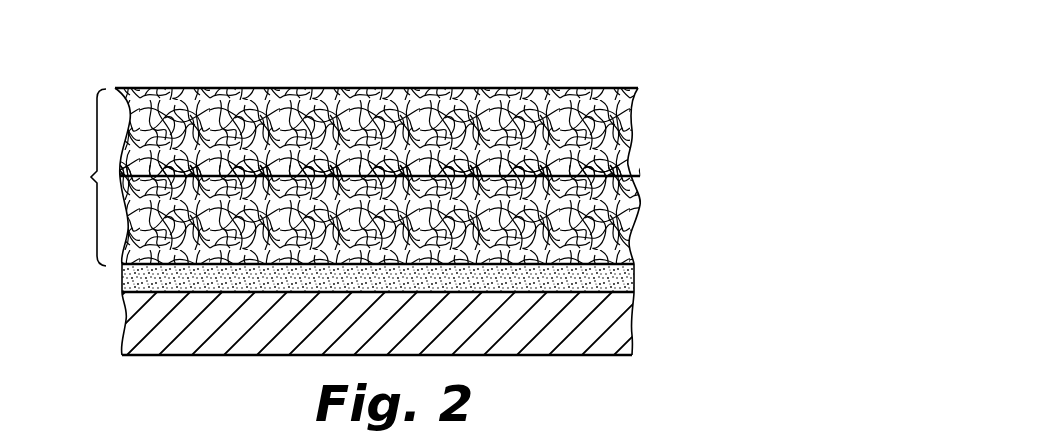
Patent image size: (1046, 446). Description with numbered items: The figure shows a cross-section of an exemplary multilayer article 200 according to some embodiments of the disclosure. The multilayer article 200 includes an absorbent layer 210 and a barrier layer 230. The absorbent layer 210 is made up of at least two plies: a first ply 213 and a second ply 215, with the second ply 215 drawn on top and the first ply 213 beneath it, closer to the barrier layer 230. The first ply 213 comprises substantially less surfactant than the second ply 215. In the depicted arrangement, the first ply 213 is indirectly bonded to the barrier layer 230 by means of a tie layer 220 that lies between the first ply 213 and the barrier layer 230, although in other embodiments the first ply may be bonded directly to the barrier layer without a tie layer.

The multilayer article 200 is at (647, 60).
The absorbent layer 210 is at (380, 175).
The second ply 215 is at (640, 110).
The first ply 213 is at (640, 205).
The tie layer 220 is at (617, 278).
The barrier layer 230 is at (618, 333).